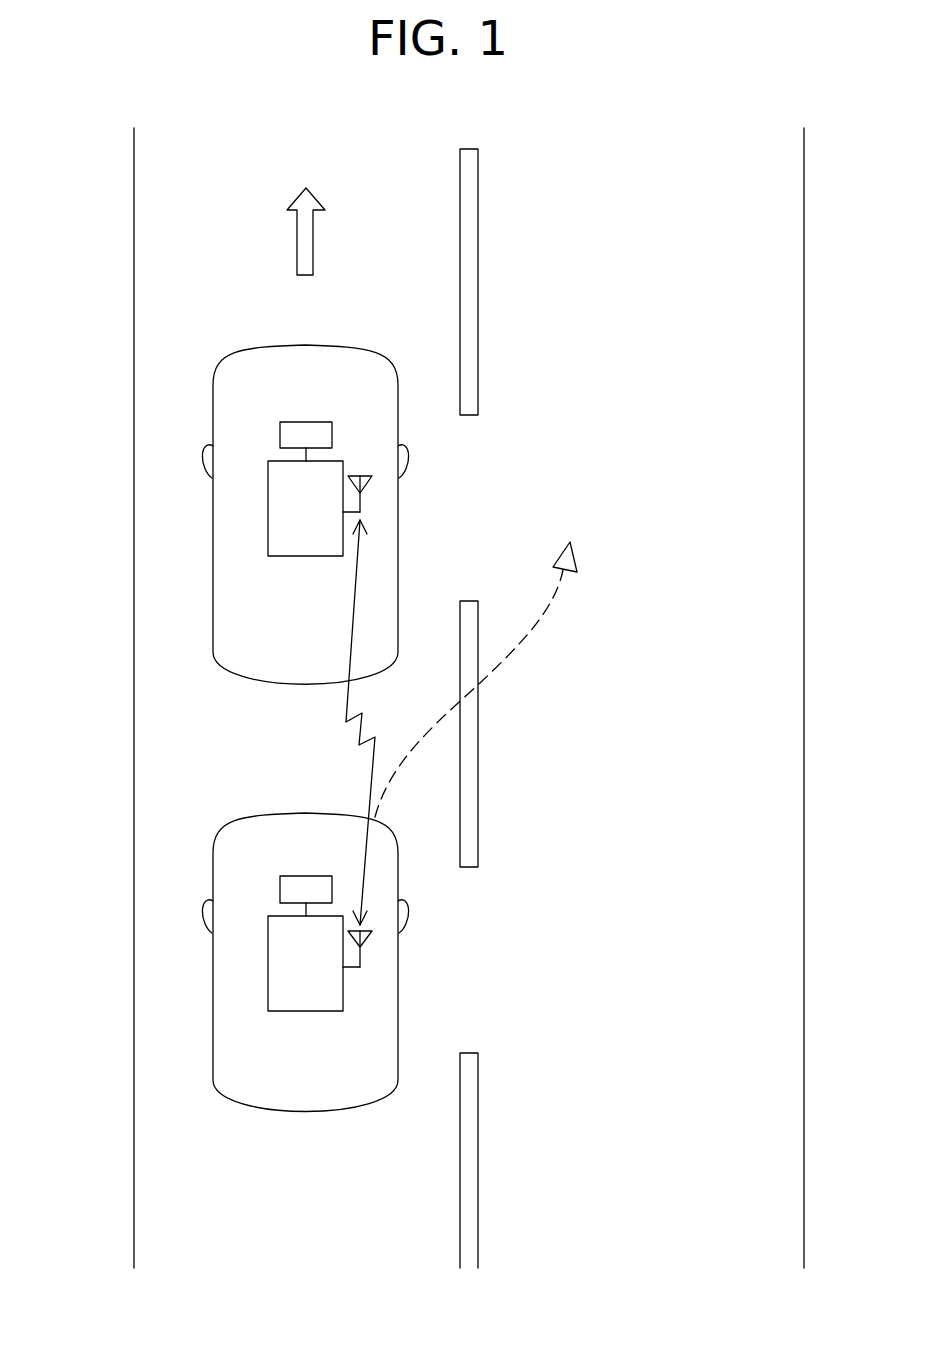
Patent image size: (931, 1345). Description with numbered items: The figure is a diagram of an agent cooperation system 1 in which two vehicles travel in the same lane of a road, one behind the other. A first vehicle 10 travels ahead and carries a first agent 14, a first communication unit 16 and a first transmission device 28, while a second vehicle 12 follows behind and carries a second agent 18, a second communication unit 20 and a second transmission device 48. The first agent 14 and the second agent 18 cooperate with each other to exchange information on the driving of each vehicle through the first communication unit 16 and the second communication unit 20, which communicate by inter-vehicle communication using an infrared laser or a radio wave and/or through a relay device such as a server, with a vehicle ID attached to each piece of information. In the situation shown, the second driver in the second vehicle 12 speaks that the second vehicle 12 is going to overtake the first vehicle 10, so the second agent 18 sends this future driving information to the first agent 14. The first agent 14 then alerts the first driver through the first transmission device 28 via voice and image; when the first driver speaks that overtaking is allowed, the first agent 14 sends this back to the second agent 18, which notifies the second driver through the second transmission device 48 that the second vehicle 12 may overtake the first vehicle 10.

The agent cooperation system 1 is at (305, 720).
The first vehicle 10 is at (213, 395).
The second vehicle 12 is at (213, 850).
The first agent 14 is at (268, 525).
The first communication unit 16 is at (362, 502).
The second agent 18 is at (268, 990).
The second communication unit 20 is at (362, 958).
The first transmission device 28 is at (280, 435).
The second transmission device 48 is at (280, 889).